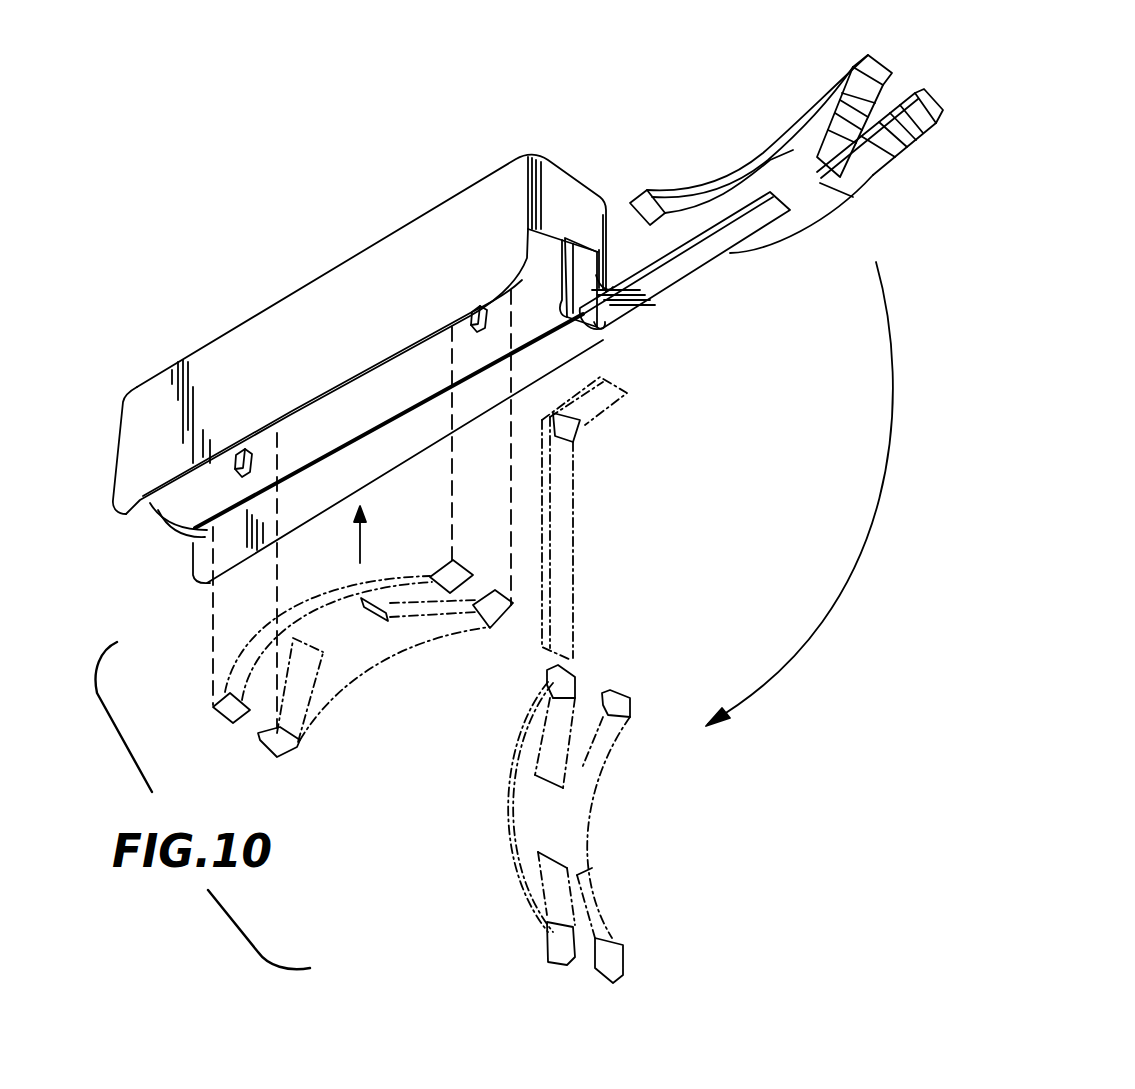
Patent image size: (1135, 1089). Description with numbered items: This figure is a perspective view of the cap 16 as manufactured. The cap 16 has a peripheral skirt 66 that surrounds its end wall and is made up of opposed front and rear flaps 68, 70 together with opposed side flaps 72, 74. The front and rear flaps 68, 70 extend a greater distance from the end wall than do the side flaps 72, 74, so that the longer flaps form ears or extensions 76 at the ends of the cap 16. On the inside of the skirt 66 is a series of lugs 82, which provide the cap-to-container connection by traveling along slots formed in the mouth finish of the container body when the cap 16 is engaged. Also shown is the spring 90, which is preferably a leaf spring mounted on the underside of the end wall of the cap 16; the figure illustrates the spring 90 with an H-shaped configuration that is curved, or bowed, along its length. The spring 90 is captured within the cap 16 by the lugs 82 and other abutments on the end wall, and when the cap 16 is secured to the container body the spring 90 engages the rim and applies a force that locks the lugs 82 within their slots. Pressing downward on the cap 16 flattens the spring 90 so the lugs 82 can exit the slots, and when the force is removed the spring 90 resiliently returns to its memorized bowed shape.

The cap 16 is at (308, 219).
The peripheral skirt 66 is at (137, 390).
The front flap 68 is at (127, 453).
The rear flap 70 is at (603, 333).
The side flap 72 is at (568, 187).
The side flap 74 is at (163, 517).
The ears or extensions 76 is at (123, 507).
The lugs 82 is at (467, 312).
The spring 90 is at (877, 177).